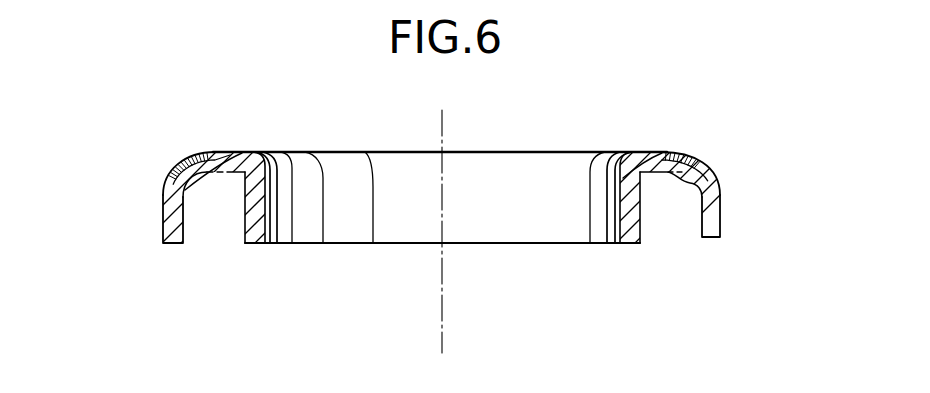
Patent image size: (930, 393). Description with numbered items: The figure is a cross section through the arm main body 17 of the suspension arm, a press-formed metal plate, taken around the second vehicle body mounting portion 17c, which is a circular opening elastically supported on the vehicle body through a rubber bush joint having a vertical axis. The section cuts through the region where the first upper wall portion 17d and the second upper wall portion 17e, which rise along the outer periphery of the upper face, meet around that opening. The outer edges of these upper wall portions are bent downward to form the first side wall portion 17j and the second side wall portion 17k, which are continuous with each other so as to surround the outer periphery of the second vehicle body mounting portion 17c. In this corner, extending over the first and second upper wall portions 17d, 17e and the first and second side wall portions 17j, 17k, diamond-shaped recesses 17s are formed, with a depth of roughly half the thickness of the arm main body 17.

The arm main body 17 is at (408, 151).
The second vehicle body mounting portion 17c is at (390, 235).
The first upper wall portion 17d is at (650, 152).
The second upper wall portion 17e is at (237, 152).
The first side wall portion 17j is at (717, 210).
The second side wall portion 17k is at (170, 228).
The diamond-shaped recesses 17s is at (199, 157).